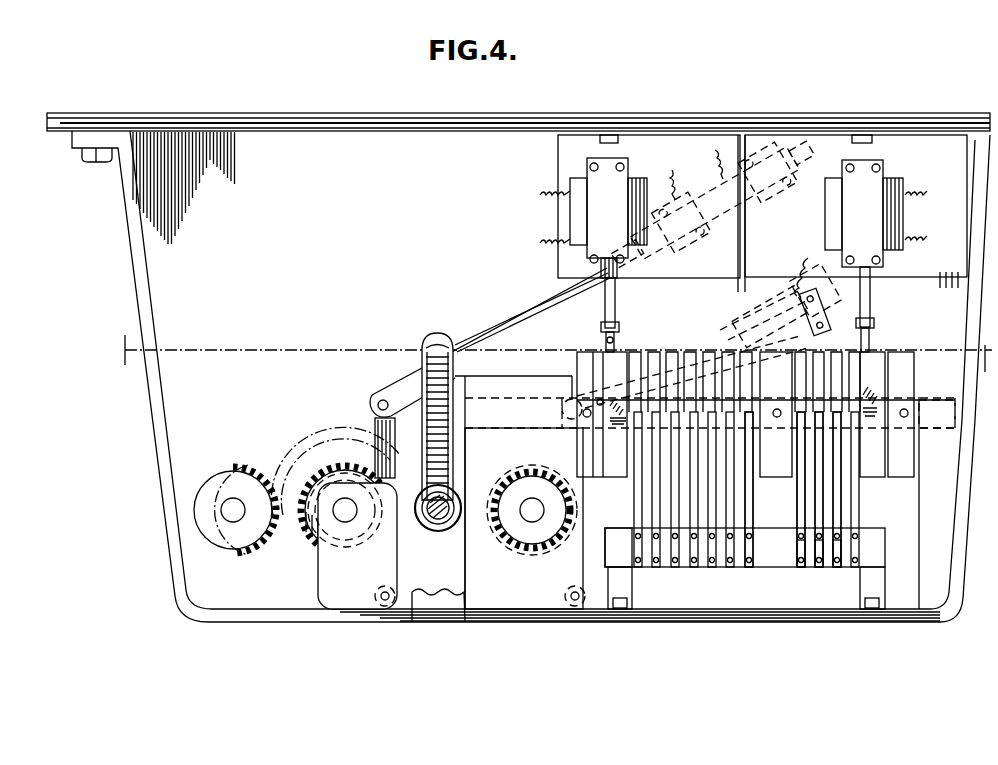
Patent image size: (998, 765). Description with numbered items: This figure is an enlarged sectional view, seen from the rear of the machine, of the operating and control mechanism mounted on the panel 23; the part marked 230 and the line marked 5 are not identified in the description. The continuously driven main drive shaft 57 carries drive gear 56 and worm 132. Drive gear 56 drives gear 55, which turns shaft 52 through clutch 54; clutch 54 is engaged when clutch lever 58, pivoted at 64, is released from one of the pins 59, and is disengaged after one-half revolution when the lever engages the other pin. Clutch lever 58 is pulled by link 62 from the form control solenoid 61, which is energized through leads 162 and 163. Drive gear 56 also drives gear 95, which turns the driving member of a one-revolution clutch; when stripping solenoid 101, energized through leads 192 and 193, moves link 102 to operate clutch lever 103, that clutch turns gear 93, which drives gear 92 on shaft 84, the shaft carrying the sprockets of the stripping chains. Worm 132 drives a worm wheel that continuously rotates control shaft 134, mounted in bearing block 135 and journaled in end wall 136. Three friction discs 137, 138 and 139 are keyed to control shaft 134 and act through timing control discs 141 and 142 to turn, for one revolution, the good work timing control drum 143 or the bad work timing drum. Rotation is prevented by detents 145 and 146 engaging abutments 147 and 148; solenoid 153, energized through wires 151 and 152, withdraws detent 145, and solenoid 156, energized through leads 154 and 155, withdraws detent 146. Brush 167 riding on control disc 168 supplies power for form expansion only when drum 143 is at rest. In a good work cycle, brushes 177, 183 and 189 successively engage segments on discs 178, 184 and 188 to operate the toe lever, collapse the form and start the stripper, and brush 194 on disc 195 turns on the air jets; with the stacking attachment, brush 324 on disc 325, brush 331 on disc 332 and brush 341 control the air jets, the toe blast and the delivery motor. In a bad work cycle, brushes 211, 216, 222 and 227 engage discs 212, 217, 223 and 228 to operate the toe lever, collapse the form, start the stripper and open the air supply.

The housing cover flange 230 is at (458, 113).
The panel 23 is at (320, 206).
The section line 5- 5 is at (545, 362).
The wire 151 is at (533, 184).
The wire 152 is at (533, 239).
The solenoid 153 is at (572, 210).
The lead 154 is at (923, 178).
The lead 155 is at (927, 230).
The bad work cycle control solenoid 156 is at (903, 209).
The stripping solenoid 101 is at (692, 204).
The lead 192 is at (700, 158).
The lead 193 is at (656, 174).
The lead 162 is at (728, 296).
The form control solenoid 61 is at (775, 302).
The lead 163 is at (808, 286).
The end wall 136 is at (970, 300).
The friction disc 137 is at (445, 340).
The link 102 is at (525, 328).
The detent 145 is at (605, 335).
The abutment 147 is at (612, 402).
The good work timing control drum 143 is at (660, 350).
The link 62 is at (690, 345).
The friction disc 138 is at (782, 348).
The detent 146 is at (868, 348).
The friction disc 139 is at (905, 360).
The timing control disc 142 is at (875, 378).
The abutment 148 is at (872, 412).
The bearing block 135 is at (512, 377).
The control shaft 134 is at (540, 398).
The clutch lever 58 is at (575, 418).
The timing control disc 141 is at (600, 438).
The clutch lever 103 is at (380, 420).
The gear 93 is at (326, 452).
The gear 92 is at (255, 467).
The gear 95 is at (322, 470).
The shaft 84 is at (233, 524).
The gear 55 is at (510, 480).
The pin 59 is at (553, 508).
The shaft 52 is at (532, 522).
The clutch 54 is at (532, 552).
The main drive shaft 57 is at (443, 518).
The drive gear 56 is at (510, 545).
The worm 132 is at (428, 540).
The disc 178 is at (628, 480).
The disc 184 is at (648, 478).
The disc 188 is at (666, 478).
The contact brush 177 is at (620, 547).
The contact brush 183 is at (645, 560).
The brush 189 is at (668, 568).
The brush 324 is at (690, 570).
The contact brush 194 is at (706, 570).
The pivot 64 is at (609, 589).
The control disc 168 is at (770, 478).
The disc 332 is at (735, 478).
The disc 195 is at (752, 478).
The disc 325 is at (745, 547).
The brush 167 is at (745, 568).
The contact brush 341 is at (730, 568).
The contact brush 331 is at (738, 572).
The disc 228 is at (837, 478).
The disc 223 is at (819, 478).
The disc 217 is at (801, 478).
The disc 212 is at (837, 478).
The brush 227 is at (860, 532).
The brush 222 is at (841, 542).
The brush 216 is at (822, 568).
The brush 211 is at (803, 572).